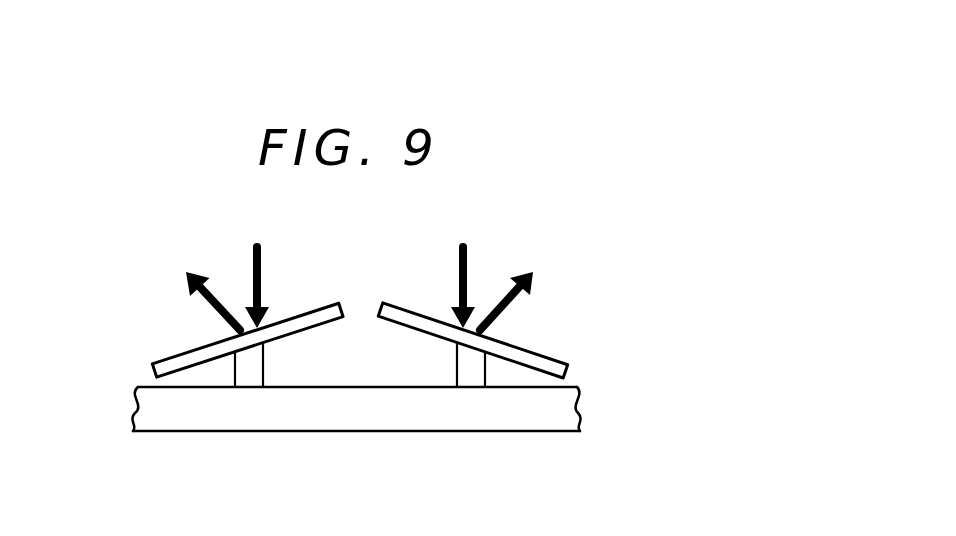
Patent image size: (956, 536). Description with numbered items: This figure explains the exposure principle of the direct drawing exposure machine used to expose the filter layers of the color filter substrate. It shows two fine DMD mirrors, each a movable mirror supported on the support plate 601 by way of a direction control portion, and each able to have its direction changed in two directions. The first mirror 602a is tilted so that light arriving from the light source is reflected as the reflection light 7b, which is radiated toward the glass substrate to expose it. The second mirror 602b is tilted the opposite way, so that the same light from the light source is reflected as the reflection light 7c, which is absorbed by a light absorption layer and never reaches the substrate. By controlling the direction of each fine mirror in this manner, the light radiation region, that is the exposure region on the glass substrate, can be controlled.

The support plate 601 is at (547, 412).
The first mirror 602a is at (523, 353).
The second mirror 602b is at (197, 353).
The reflection light 7b is at (500, 297).
The reflection light 7c is at (218, 293).